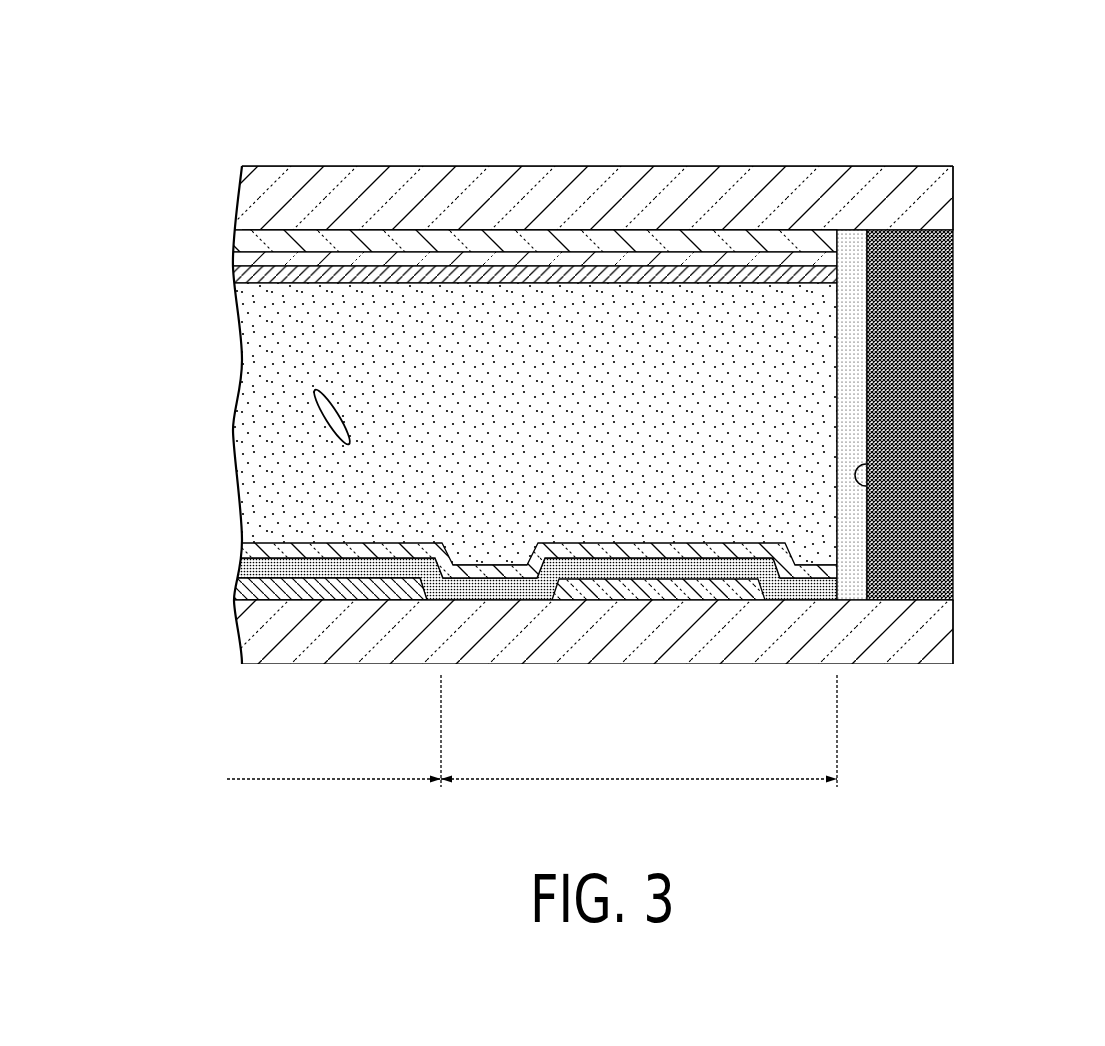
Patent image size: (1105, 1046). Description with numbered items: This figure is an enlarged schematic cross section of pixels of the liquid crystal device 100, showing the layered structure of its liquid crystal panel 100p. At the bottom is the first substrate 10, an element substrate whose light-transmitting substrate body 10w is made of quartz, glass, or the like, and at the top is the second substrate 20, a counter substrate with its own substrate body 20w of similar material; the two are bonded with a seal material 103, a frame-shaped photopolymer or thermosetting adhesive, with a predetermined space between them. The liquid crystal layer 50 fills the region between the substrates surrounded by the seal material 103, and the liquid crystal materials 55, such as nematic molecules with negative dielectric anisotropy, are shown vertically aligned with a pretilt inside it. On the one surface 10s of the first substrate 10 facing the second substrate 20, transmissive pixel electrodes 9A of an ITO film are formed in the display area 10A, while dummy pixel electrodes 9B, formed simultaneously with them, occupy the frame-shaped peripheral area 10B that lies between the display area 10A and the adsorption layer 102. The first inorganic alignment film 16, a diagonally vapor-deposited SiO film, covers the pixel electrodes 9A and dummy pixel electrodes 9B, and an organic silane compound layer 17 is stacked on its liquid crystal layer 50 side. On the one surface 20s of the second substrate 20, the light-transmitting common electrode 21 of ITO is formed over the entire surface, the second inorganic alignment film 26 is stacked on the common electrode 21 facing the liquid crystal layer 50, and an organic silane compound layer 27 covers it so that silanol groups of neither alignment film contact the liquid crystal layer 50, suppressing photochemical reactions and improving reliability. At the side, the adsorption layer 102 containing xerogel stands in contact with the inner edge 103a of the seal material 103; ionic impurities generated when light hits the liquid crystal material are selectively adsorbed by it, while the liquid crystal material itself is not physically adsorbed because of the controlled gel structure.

The liquid crystal device 100 is at (603, 408).
The liquid crystal panel 100p is at (474, 160).
The second substrate 20 is at (652, 146).
The substrate body 20w is at (955, 187).
The one surface 20s is at (574, 230).
The common electrode 21 is at (240, 240).
The second inorganic alignment film 26 is at (240, 260).
The organic silane compound layer 27 is at (240, 275).
The liquid crystal layer 50 is at (532, 330).
The liquid crystal material 55 is at (336, 404).
The organic silane compound layer 17 is at (240, 553).
The first inorganic alignment film 16 is at (240, 566).
The one surface 10s is at (368, 590).
The pixel electrode 9A is at (308, 598).
The dummy pixel electrode 9B is at (666, 598).
The first substrate 10 is at (652, 706).
The substrate body 10w is at (955, 645).
The display area 10A is at (334, 744).
The peripheral area 10B is at (639, 744).
The adsorption layer 102 is at (855, 340).
The seal material 103 is at (965, 415).
The inner edge 103a is at (866, 485).